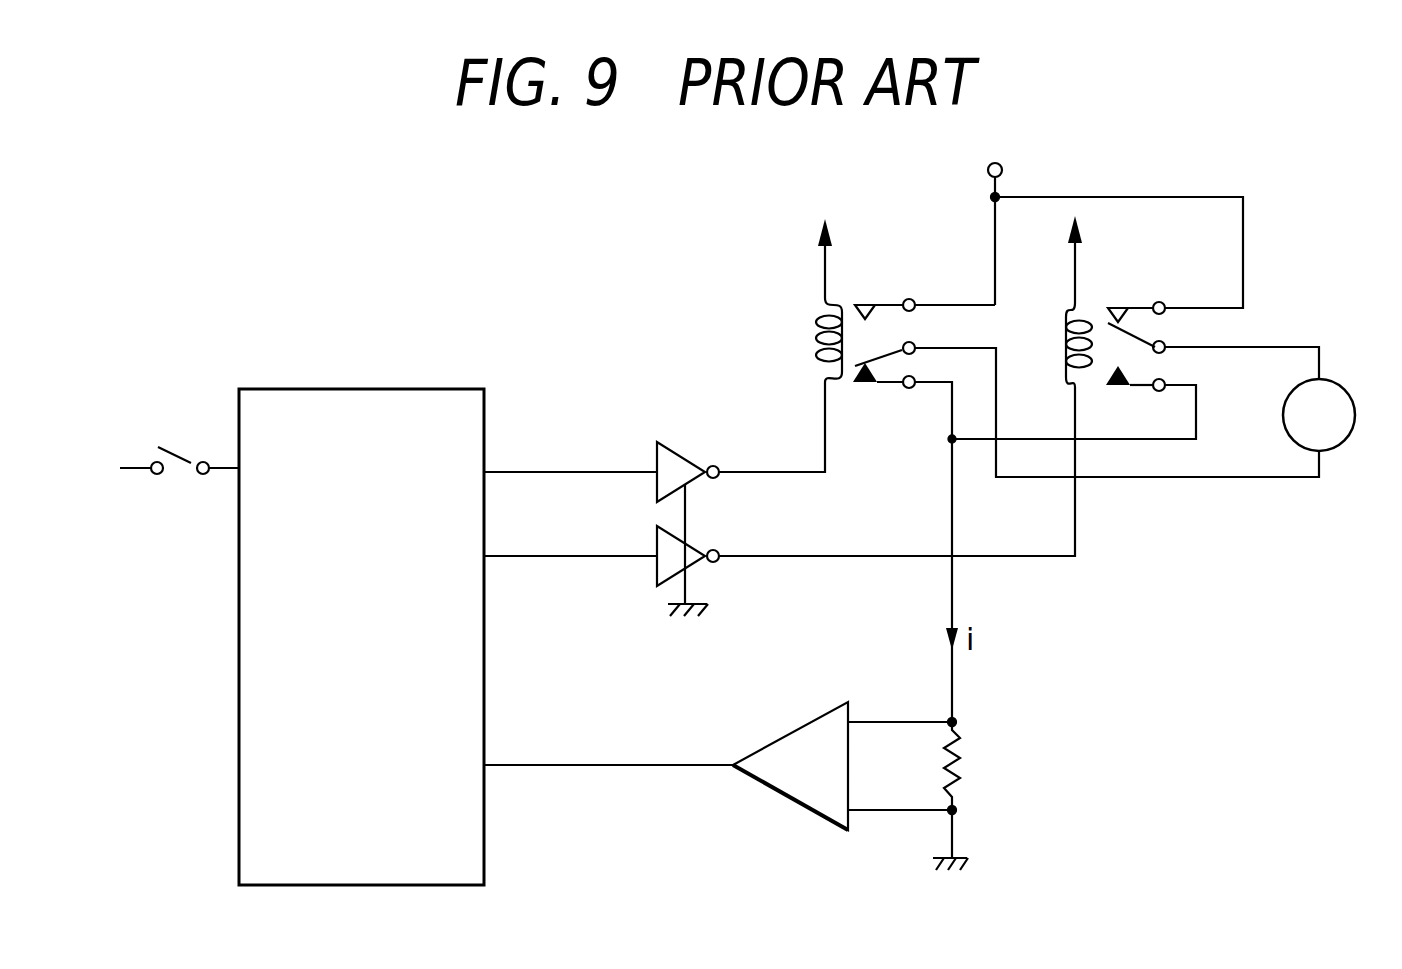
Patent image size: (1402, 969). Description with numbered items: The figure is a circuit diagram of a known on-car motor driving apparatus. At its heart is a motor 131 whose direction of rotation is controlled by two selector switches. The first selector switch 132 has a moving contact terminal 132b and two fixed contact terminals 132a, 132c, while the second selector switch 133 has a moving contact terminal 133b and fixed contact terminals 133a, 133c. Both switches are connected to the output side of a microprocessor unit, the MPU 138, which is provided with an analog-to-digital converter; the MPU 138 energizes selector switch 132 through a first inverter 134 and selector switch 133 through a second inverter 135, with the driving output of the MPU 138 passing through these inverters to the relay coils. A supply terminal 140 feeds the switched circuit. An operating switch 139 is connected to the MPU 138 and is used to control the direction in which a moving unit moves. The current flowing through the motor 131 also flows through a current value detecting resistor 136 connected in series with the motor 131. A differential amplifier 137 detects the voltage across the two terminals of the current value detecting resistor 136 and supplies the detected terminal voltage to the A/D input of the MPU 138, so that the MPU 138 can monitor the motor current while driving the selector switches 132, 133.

The motor 131 is at (1338, 382).
The selector switch 132 is at (857, 390).
The fixed contact terminal 132a is at (925, 292).
The moving contact terminal 132b is at (1111, 393).
The fixed contact terminal 132c is at (1036, 535).
The selector switch 133 is at (1118, 306).
The fixed contact terminal 133a is at (1119, 259).
The moving contact terminal 133b is at (1236, 345).
The fixed contact terminal 133c is at (1180, 370).
The first inverter 134 is at (687, 458).
The second inverter 135 is at (687, 537).
The current value detecting resistor 136 is at (960, 747).
The differential amplifier 137 is at (762, 785).
The microprocessor unit (MPU) 138 is at (488, 397).
The operating switch 139 is at (177, 473).
The power supply terminal Vb 140 is at (1003, 168).